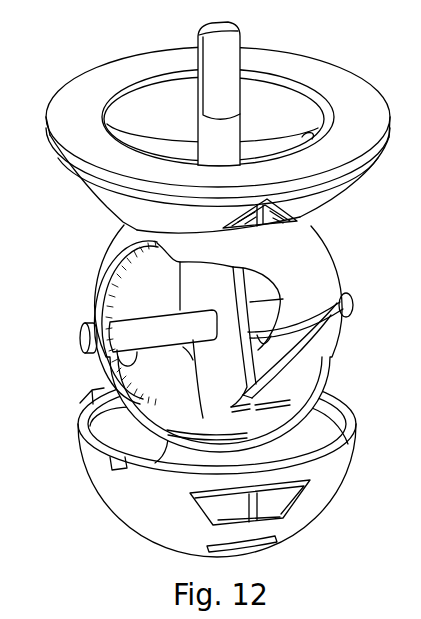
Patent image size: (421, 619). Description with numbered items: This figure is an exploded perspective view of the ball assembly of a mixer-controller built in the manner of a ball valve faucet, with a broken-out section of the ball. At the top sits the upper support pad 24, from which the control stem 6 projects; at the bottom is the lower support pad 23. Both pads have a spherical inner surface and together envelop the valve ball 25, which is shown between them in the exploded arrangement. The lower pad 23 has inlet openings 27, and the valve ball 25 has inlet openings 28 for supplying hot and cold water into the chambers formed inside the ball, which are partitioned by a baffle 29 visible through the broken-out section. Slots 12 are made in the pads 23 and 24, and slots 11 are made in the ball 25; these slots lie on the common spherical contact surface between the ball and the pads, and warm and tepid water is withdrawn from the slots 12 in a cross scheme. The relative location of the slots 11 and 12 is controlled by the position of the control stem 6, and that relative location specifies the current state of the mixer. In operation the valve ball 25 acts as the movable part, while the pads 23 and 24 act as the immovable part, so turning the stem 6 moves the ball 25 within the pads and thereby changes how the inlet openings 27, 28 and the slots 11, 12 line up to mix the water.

The control stem 6 is at (223, 140).
The slots 11 is at (287, 413).
The slots 12 is at (285, 228).
The lower support pad 23 is at (332, 460).
The upper support pad 24 is at (88, 110).
The valve ball 25 is at (107, 270).
The inlet openings 27 is at (260, 453).
The inlet openings 28 is at (245, 338).
The baffle 29 is at (205, 362).